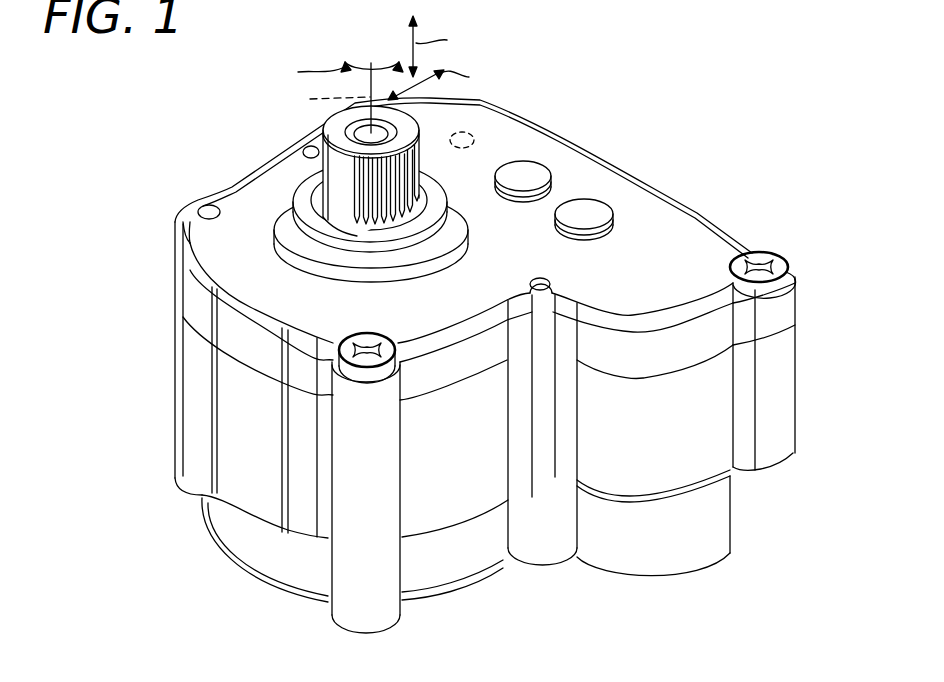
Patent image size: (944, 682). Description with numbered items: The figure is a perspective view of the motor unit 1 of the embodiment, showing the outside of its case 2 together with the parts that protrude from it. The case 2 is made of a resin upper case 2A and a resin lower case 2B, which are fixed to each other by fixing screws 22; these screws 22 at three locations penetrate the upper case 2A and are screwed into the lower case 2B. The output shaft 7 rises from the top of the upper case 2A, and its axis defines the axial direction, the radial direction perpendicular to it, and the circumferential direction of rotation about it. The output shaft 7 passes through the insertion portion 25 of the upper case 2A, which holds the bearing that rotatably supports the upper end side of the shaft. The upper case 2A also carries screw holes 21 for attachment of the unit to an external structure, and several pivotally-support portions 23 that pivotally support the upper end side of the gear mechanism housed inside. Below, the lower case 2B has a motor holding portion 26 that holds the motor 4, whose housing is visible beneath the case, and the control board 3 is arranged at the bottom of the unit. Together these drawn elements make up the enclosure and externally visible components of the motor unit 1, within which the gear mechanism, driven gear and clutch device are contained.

The motor unit 1 is at (598, 97).
The case 2 is at (485, 358).
The upper case 2A is at (718, 247).
The lower case 2B is at (778, 413).
The control board 3 is at (466, 590).
The motor 4 is at (735, 505).
The output shaft 7 is at (420, 133).
The screw holes 21 is at (310, 150).
The fixing screws 22 is at (385, 345).
The pivotally-support portions 23 is at (476, 136).
The insertion portion 25 is at (242, 193).
The motor holding portion 26 is at (656, 466).